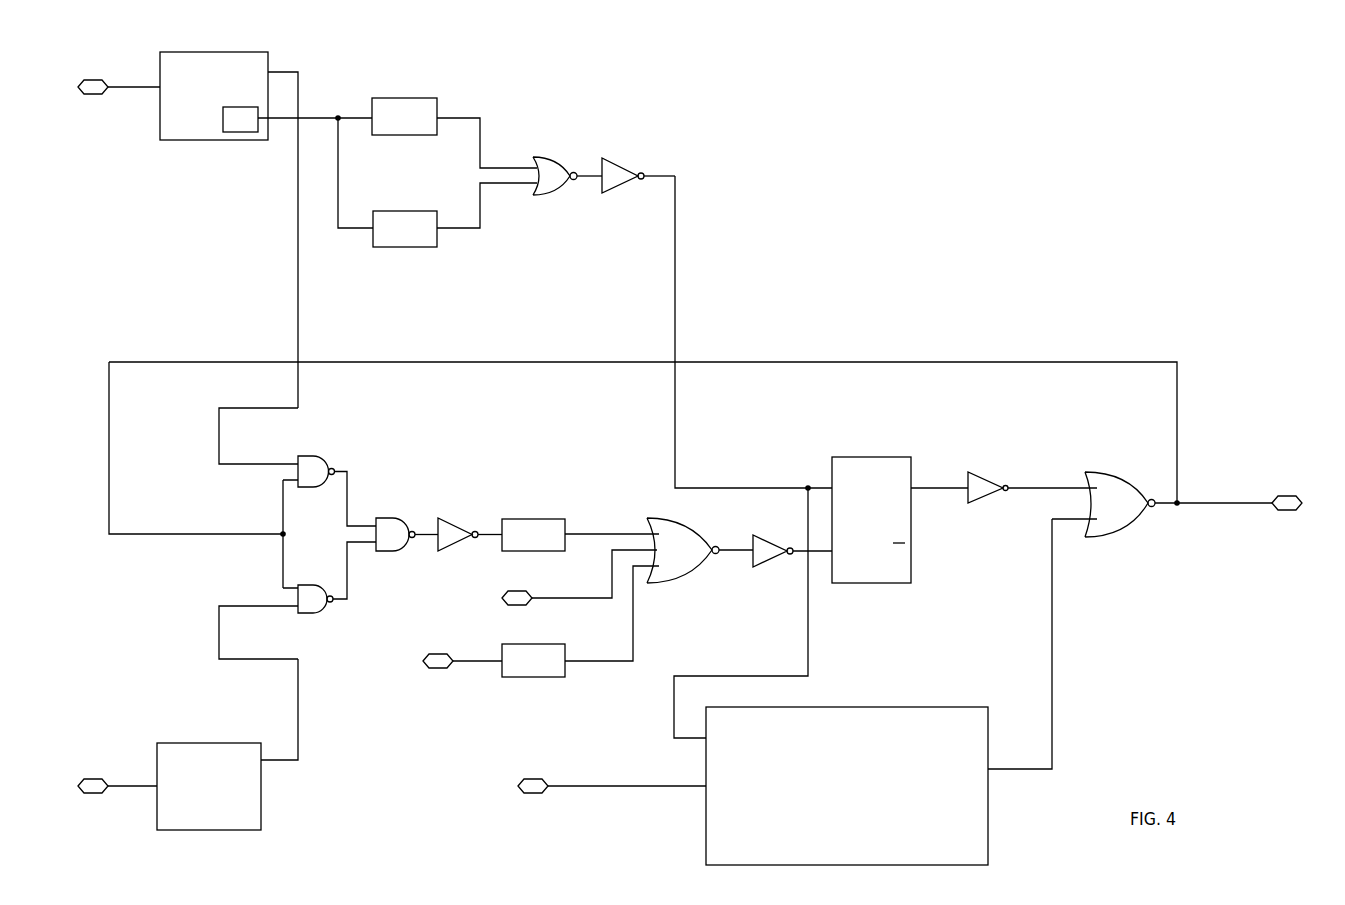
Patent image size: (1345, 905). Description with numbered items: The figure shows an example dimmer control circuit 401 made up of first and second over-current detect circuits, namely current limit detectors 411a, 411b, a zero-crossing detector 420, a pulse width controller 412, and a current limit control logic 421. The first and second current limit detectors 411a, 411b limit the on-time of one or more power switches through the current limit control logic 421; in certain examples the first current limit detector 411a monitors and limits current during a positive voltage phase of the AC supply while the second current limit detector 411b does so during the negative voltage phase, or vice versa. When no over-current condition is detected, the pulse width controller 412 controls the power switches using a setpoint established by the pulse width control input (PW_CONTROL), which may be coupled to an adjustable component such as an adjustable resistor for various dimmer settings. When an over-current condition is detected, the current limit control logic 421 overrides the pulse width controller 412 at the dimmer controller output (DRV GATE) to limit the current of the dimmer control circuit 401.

The dimmer control circuit 401 is at (883, 136).
The zero-crossing detector 420 is at (536, 50).
The current limit control logic 421 is at (505, 437).
The first current limit detector 411a is at (219, 142).
The second current limit detector 411b is at (232, 832).
The pulse width controller 412 is at (878, 705).